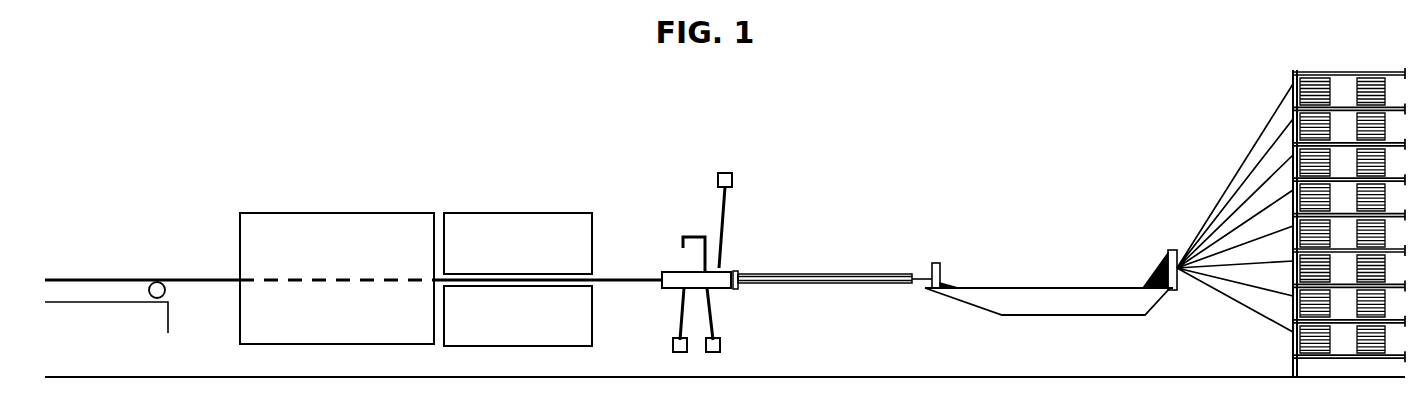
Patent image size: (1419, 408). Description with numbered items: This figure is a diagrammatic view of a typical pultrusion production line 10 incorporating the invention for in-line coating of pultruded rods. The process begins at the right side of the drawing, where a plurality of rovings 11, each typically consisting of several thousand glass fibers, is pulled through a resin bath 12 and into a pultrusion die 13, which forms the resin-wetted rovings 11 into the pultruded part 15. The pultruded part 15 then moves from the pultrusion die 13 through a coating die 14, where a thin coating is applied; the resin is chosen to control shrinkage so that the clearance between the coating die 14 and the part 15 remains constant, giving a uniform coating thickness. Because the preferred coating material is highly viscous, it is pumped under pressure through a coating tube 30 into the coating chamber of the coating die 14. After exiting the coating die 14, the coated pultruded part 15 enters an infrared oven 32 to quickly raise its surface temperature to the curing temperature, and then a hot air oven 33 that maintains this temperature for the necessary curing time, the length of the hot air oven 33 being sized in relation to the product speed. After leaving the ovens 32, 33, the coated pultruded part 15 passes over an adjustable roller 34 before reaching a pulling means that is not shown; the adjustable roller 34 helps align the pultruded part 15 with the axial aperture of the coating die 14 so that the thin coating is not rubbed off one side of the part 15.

The pultrusion production line 10 is at (418, 127).
The rovings 11 is at (1237, 222).
The resin bath 12 is at (1022, 295).
The pultrusion die 13 is at (845, 277).
The coating die 14 is at (677, 275).
The pultruded part 15 is at (617, 276).
The coating tube 30 is at (695, 221).
The infrared oven 32 is at (503, 259).
The hot air oven 33 is at (313, 257).
The adjustable roller 34 is at (155, 282).